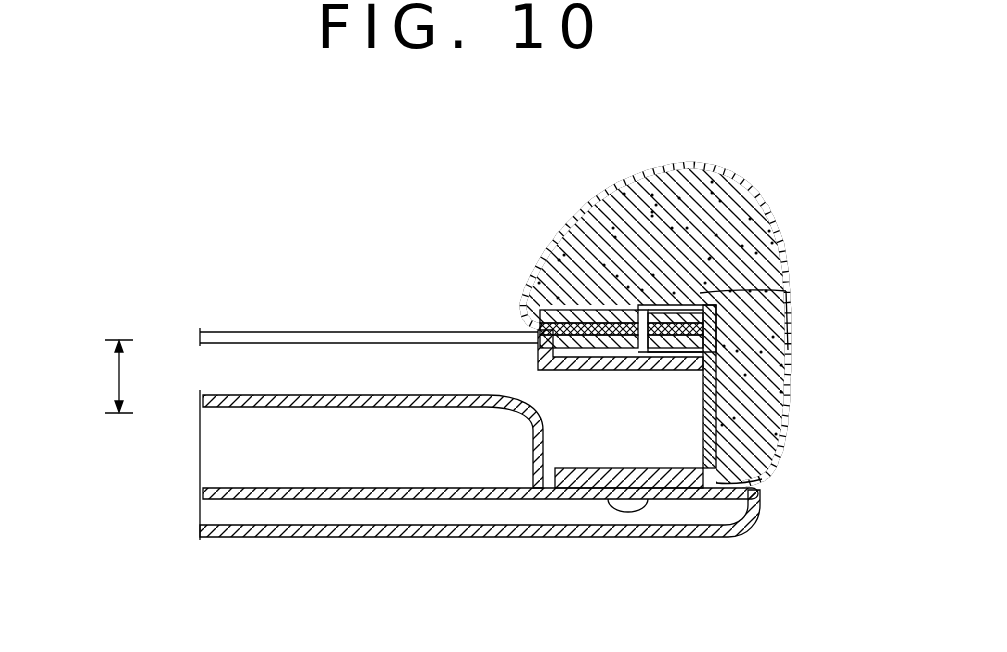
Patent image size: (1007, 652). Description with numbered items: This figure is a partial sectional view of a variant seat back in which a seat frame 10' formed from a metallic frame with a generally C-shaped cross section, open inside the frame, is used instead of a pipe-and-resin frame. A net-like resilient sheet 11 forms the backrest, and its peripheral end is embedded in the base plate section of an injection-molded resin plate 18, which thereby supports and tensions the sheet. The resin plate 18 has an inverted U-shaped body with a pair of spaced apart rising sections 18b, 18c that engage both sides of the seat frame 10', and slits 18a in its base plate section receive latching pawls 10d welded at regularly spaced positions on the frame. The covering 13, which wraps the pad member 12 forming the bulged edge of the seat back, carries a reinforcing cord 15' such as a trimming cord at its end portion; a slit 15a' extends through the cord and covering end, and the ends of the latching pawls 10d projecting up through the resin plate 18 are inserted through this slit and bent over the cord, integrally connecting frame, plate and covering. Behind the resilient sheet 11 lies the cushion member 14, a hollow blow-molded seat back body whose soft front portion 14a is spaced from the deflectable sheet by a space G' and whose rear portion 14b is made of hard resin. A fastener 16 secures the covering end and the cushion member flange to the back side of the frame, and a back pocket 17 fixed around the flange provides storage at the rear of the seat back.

The covering member 13 is at (748, 192).
The pad member 12 is at (782, 362).
The latching pawls 10d is at (778, 292).
The resilient sheet 11 is at (355, 332).
The cushion member 14 is at (435, 405).
The front portion 14a is at (245, 395).
The rear portion 14b is at (222, 488).
The back pocket 17 is at (357, 537).
The fastener 16 is at (628, 512).
The seat frame 10' is at (612, 533).
The resin plate 18 is at (680, 355).
The slits 18a is at (665, 368).
The rising section 18b is at (547, 362).
The rising section 18c is at (782, 320).
The reinforcing cord 15' is at (615, 262).
The slit 15a' is at (702, 263).
The space G' is at (124, 355).